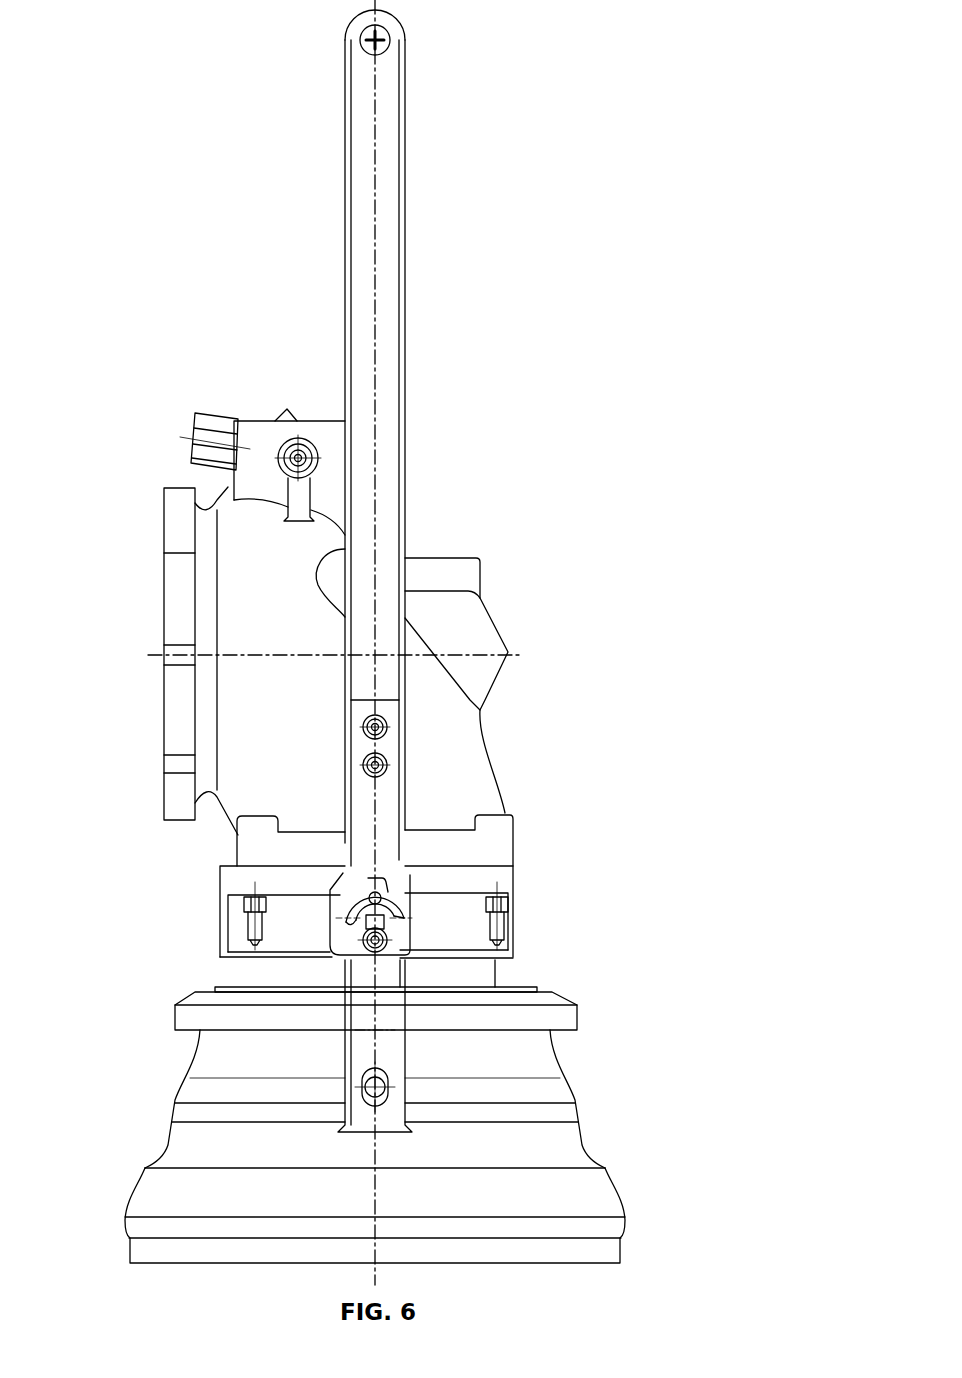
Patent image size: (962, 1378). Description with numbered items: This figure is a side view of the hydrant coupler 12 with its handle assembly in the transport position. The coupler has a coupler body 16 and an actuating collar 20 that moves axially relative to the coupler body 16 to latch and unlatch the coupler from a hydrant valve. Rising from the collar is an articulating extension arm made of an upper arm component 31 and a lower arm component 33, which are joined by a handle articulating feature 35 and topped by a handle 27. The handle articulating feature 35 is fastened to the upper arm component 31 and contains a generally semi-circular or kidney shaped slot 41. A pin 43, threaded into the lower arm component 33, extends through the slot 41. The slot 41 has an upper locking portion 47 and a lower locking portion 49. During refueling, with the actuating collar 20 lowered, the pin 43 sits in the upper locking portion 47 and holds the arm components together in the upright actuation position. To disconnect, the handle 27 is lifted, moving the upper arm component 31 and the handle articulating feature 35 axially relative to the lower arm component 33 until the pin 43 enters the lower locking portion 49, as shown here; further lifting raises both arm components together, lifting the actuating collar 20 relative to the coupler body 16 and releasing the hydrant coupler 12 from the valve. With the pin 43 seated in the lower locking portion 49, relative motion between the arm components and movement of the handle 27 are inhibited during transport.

The hydrant coupler 12 is at (132, 380).
The coupler body 16 is at (255, 588).
The actuating collar 20 is at (555, 1095).
The handle 27 is at (392, 46).
The upper arm component 31 is at (390, 370).
The lower arm component 33 is at (388, 984).
The handle articulating feature 35 is at (392, 765).
The slot 41 is at (400, 910).
The pin 43 is at (383, 875).
The upper locking portion 47 is at (350, 885).
The lower locking portion 49 is at (362, 928).